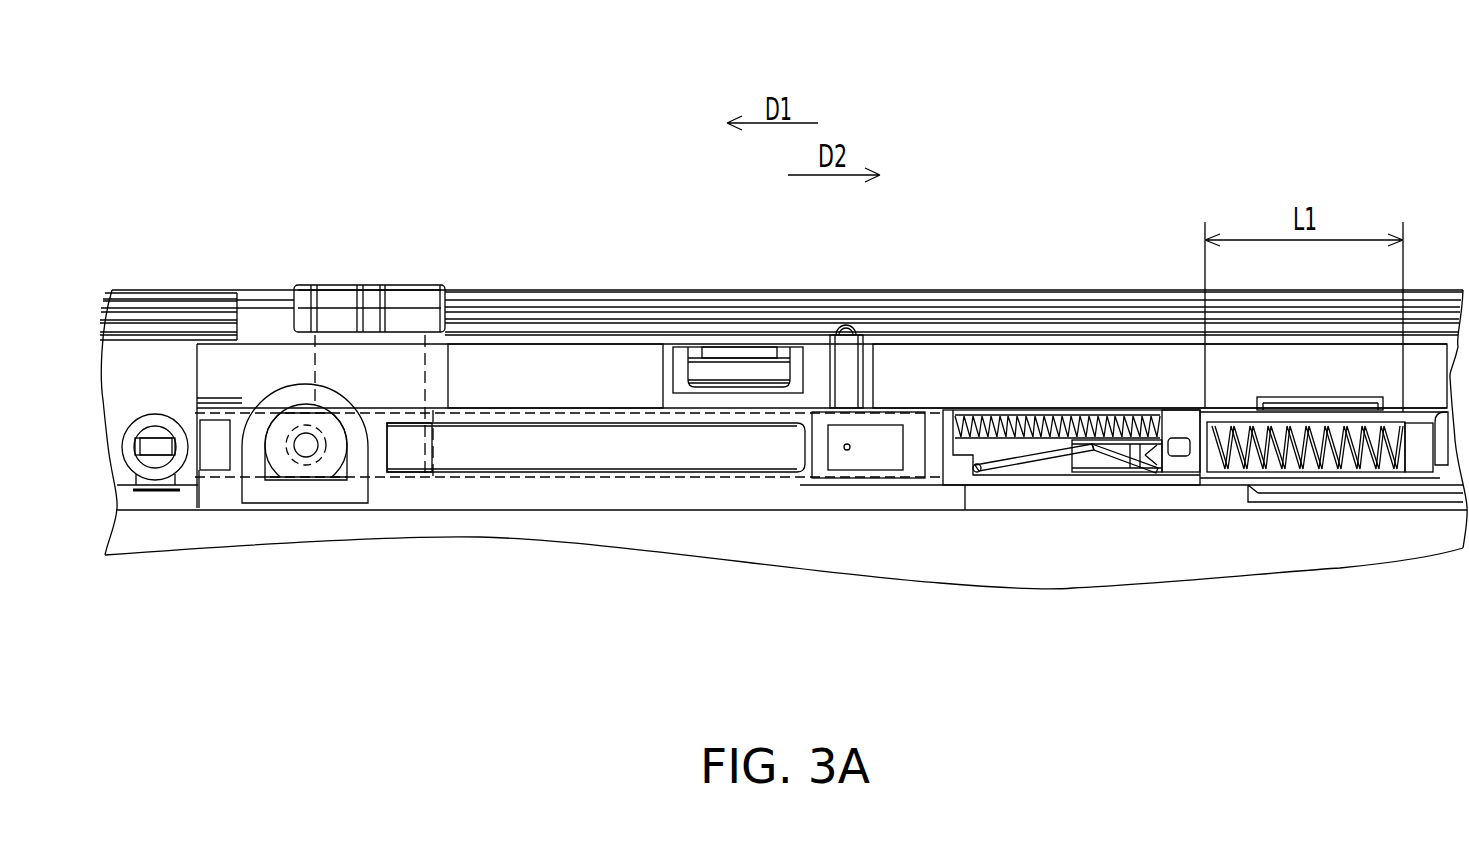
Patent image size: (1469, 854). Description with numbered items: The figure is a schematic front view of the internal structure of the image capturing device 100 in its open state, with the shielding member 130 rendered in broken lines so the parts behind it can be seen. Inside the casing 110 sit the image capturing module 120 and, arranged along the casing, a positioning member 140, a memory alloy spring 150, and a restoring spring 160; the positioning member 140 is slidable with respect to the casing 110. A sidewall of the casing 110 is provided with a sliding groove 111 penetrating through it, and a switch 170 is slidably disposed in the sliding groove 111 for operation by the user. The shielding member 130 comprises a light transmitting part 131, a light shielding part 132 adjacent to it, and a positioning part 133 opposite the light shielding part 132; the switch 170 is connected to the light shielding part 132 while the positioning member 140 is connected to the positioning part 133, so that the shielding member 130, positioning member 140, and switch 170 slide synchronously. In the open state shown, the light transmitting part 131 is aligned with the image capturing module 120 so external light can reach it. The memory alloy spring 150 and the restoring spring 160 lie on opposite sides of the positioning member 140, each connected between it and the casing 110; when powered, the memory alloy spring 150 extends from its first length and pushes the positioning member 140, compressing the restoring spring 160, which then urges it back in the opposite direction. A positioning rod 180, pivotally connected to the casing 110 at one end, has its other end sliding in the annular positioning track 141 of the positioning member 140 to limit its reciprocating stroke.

The image capturing device 100 is at (1430, 714).
The casing 110 is at (617, 300).
The sliding groove 111 is at (265, 297).
The image capturing module 120 is at (306, 450).
The shielding member 130 is at (613, 450).
The light transmitting part 131 is at (282, 475).
The light shielding part 132 is at (402, 455).
The positioning part 133 is at (1183, 423).
The positioning member 140 is at (1137, 470).
The positioning track 141 is at (1132, 462).
The memory alloy spring 150 is at (1303, 466).
The restoring spring 160 is at (1047, 418).
The switch 170 is at (408, 300).
The positioning rod 180 is at (1032, 466).